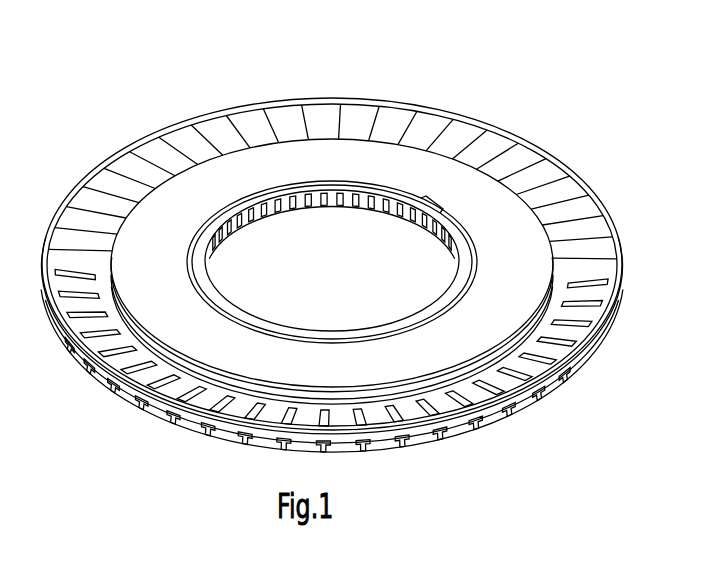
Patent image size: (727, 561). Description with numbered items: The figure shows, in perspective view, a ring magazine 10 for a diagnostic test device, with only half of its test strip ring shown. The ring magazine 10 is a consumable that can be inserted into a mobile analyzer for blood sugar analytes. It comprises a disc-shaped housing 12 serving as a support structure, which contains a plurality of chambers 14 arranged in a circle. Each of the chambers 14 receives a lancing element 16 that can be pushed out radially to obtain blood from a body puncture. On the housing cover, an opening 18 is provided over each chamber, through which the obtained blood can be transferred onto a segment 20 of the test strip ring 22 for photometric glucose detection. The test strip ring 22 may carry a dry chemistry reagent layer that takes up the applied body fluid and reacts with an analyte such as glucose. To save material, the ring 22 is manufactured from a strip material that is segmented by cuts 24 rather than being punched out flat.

The ring magazine 10 is at (351, 290).
The disc-shaped housing 12 is at (597, 350).
The chambers 14 is at (463, 427).
The lancing elements 16 is at (411, 424).
The opening 18 is at (537, 400).
The segment 20 is at (604, 270).
The test strip ring 22 is at (548, 180).
The cuts 24 is at (576, 226).